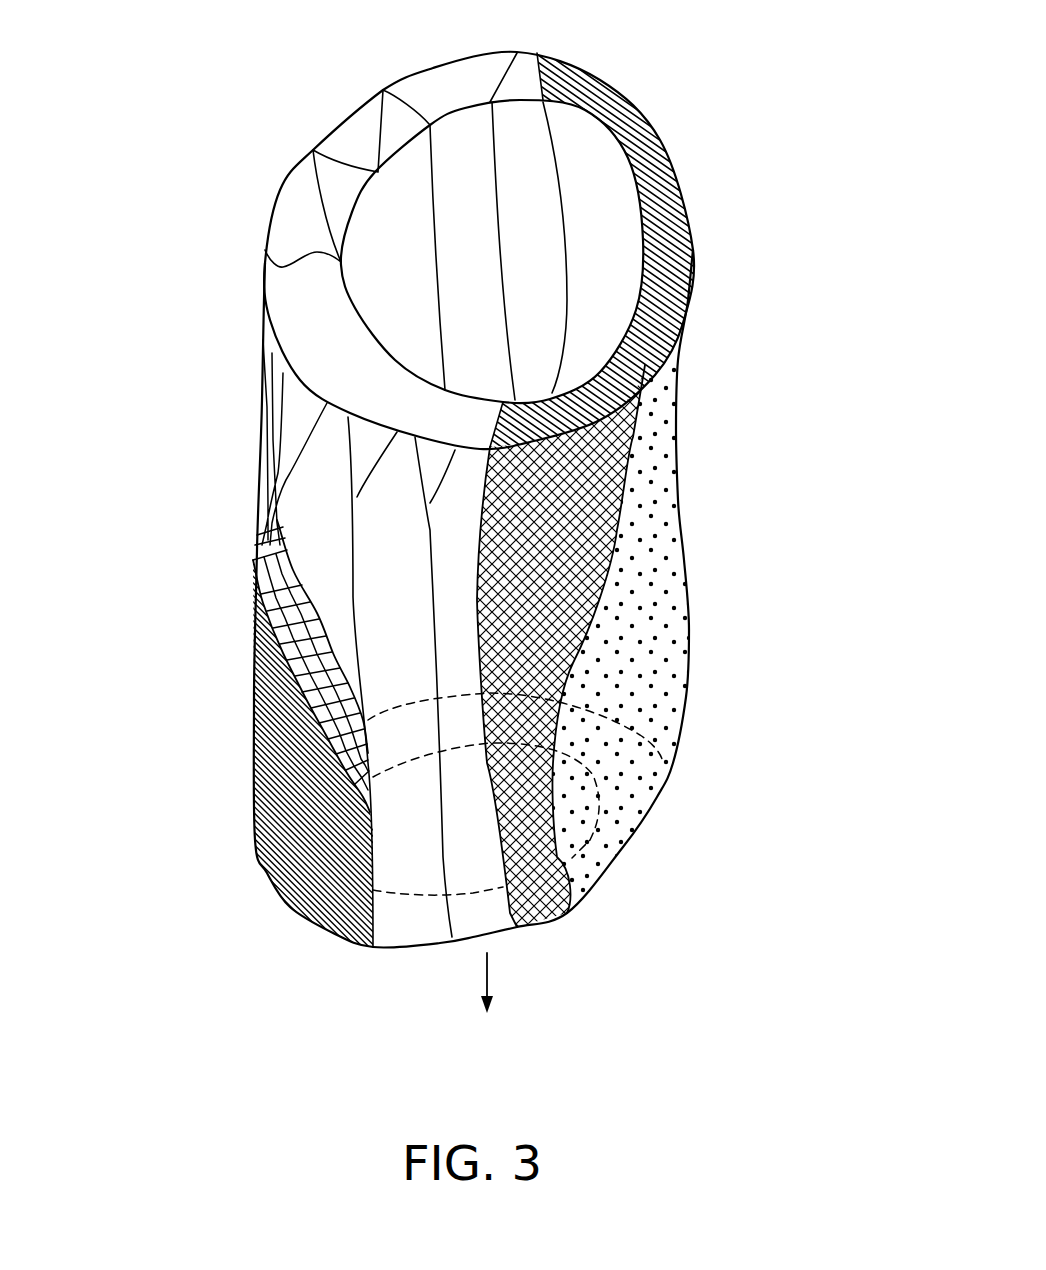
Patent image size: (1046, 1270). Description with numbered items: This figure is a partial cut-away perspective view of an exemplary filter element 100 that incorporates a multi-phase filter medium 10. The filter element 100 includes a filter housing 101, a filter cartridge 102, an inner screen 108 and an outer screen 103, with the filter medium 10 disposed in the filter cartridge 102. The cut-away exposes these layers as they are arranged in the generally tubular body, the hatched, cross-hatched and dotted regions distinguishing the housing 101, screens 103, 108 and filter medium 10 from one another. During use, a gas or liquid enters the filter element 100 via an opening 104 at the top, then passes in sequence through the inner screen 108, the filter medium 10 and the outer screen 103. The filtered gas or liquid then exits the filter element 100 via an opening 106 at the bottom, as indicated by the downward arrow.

The filter element 100 is at (178, 165).
The filter cartridge 102 is at (715, 91).
The opening 104 is at (450, 190).
The filter medium 10 is at (433, 617).
The outer screen 103 is at (257, 520).
The filter housing 101 is at (277, 850).
The inner screen 108 is at (607, 432).
The opening 106 is at (360, 984).